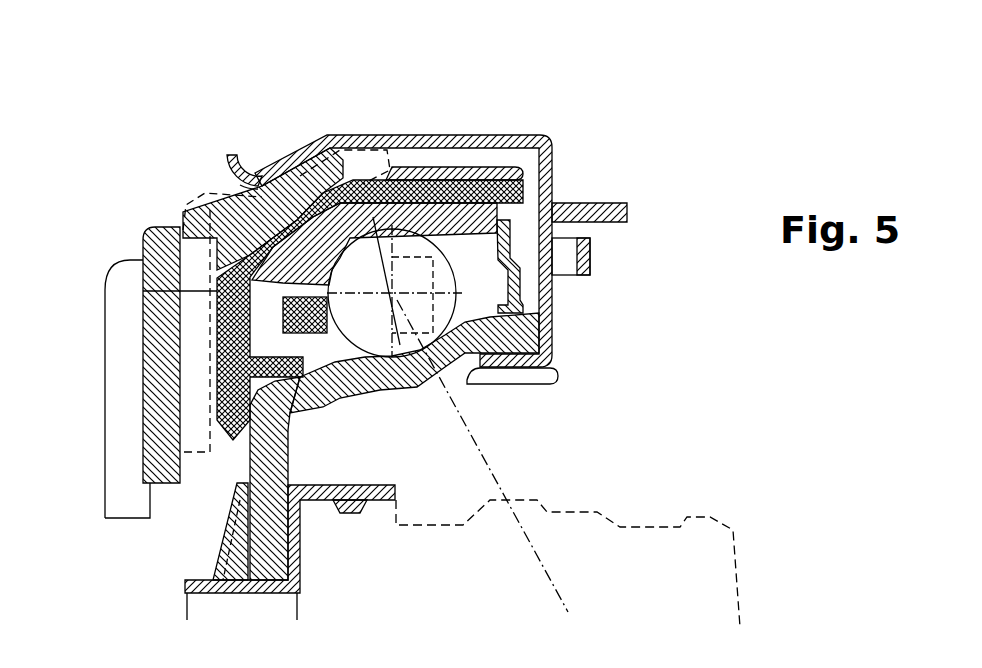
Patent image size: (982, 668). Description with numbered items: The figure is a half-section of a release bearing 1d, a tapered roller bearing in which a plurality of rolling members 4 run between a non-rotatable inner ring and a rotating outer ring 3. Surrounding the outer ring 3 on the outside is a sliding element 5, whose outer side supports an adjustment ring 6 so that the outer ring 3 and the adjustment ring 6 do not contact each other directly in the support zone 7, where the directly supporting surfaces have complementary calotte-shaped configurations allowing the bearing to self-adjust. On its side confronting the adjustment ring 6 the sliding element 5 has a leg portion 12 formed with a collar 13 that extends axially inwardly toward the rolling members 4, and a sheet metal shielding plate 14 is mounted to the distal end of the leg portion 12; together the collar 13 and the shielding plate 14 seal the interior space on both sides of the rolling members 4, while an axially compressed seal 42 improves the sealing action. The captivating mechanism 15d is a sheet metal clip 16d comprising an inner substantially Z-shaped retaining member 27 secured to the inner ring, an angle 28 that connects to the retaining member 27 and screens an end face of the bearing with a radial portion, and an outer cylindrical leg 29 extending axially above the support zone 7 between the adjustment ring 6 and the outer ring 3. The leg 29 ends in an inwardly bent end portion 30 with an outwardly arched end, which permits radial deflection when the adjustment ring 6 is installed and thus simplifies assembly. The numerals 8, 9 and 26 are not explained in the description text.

The release bearing 1d is at (258, 150).
The outer ring 3 is at (530, 200).
The rolling members 4 is at (425, 360).
The sliding element 5 is at (217, 311).
The adjustment ring 6 is at (143, 232).
The support zone 7 is at (263, 179).
The seal carrier 8 is at (311, 208).
The bearing shell 9 is at (347, 187).
The leg portion 12 is at (227, 437).
The collar 13 is at (300, 418).
The shielding plate 14 is at (558, 310).
The captivating mechanism 15d is at (222, 160).
The clip 16d is at (567, 157).
The lower bearing shell 26 is at (378, 392).
The retaining member 27 is at (507, 383).
The angle 28 is at (560, 201).
The outer cylindrical leg 29 is at (513, 137).
The end portion 30 is at (232, 172).
The seal 42 is at (547, 140).